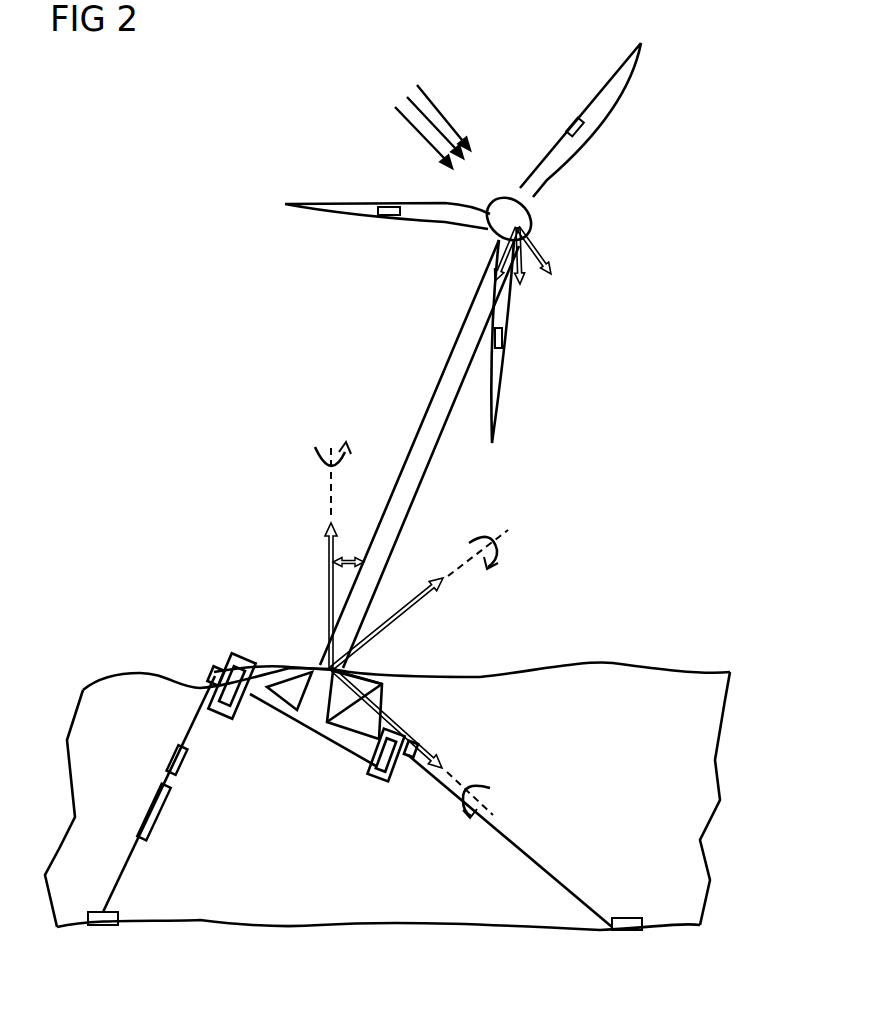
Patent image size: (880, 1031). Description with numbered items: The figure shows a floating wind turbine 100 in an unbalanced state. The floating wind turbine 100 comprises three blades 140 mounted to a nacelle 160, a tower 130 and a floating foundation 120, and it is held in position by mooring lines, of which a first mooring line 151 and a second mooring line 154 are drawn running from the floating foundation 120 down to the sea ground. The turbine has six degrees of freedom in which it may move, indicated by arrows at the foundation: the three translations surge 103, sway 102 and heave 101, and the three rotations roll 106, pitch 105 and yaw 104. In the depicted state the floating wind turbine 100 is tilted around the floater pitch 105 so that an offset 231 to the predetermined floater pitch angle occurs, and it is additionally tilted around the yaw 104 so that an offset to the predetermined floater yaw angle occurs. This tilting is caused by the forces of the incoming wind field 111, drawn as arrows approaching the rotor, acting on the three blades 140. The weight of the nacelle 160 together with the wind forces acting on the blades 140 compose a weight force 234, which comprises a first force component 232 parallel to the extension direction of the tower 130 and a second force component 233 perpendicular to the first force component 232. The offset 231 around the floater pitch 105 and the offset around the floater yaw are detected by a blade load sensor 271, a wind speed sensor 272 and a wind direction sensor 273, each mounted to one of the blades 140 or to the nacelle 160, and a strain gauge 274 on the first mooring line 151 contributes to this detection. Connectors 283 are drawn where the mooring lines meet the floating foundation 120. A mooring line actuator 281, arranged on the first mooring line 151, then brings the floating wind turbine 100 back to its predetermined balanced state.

The floating wind turbine 100 is at (685, 178).
The heave 101 is at (328, 566).
The sway 102 is at (400, 620).
The surge 103 is at (427, 752).
The yaw 104 is at (313, 457).
The pitch 105 is at (487, 533).
The roll 106 is at (482, 788).
The incoming wind field 111 is at (440, 108).
The floating foundation 120 is at (308, 723).
The tower 130 is at (420, 448).
The blades 140 is at (355, 208).
The first mooring line 151 is at (132, 870).
The second mooring line 154 is at (522, 862).
The nacelle 160 is at (500, 205).
The offset to the predetermined floater pitch angle 231 is at (353, 553).
The first force component 232 is at (497, 248).
The second force component 233 is at (552, 257).
The weight force 234 is at (527, 275).
The blade load sensor 271 is at (388, 223).
The wind speed sensor 272 is at (583, 132).
The wind direction sensor 273 is at (505, 338).
The strain gauge 274 is at (187, 768).
The mooring line actuator 281 is at (153, 828).
The mooring line connector / fairlead 283 is at (237, 653).